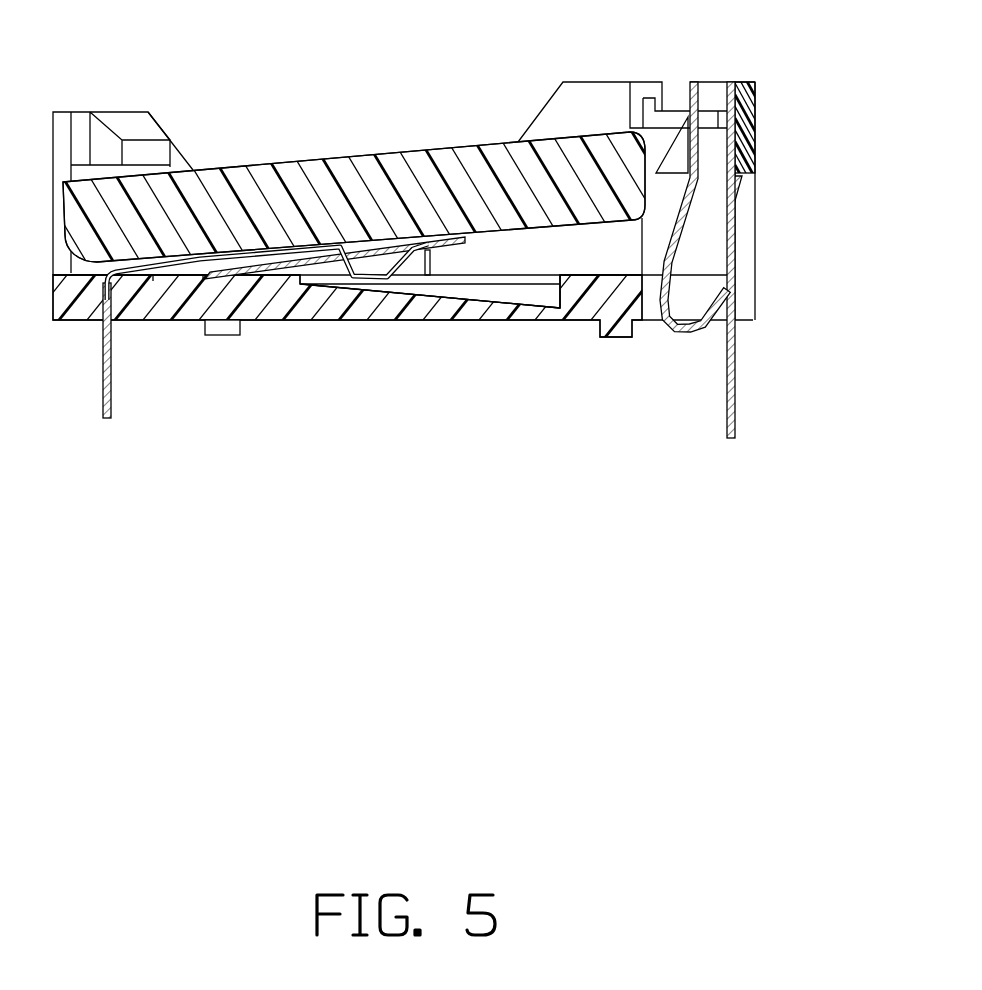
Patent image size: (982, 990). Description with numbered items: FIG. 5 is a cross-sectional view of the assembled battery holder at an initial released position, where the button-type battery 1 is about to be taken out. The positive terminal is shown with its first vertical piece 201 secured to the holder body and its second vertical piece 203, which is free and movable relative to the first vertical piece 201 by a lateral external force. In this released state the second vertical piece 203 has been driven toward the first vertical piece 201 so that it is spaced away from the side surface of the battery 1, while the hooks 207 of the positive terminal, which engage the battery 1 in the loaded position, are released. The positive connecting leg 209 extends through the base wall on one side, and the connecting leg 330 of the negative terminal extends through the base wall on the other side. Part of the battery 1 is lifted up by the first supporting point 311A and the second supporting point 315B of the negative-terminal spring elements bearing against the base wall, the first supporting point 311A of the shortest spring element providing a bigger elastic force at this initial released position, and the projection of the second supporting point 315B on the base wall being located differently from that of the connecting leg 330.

The button-type battery 1 is at (397, 192).
The first vertical piece 201 is at (733, 254).
The second vertical piece 203 is at (693, 110).
The hook 207 is at (678, 150).
The positive connecting leg 209 is at (735, 400).
The first supporting point 311A is at (377, 283).
The second supporting point 315B is at (210, 283).
The connecting leg 330 is at (111, 365).